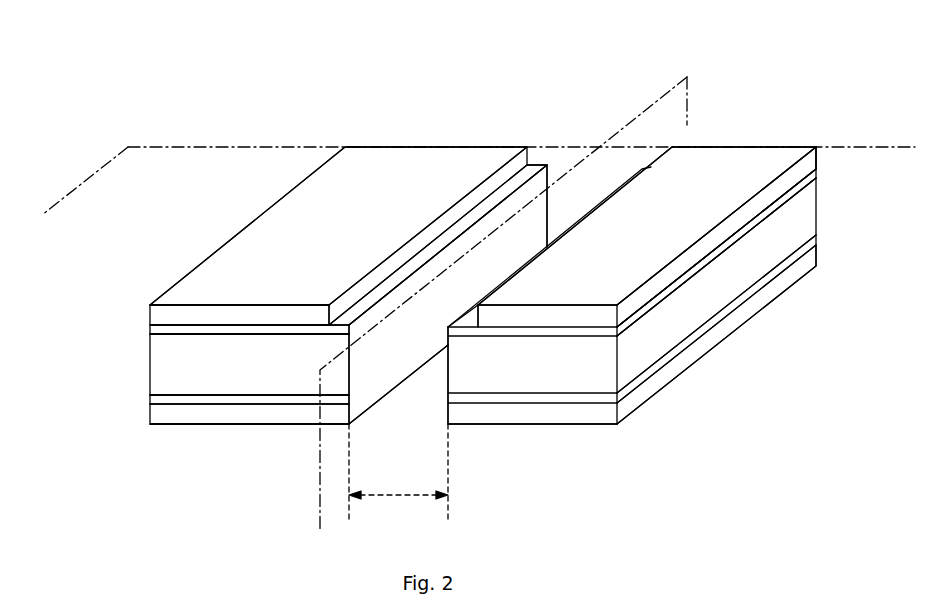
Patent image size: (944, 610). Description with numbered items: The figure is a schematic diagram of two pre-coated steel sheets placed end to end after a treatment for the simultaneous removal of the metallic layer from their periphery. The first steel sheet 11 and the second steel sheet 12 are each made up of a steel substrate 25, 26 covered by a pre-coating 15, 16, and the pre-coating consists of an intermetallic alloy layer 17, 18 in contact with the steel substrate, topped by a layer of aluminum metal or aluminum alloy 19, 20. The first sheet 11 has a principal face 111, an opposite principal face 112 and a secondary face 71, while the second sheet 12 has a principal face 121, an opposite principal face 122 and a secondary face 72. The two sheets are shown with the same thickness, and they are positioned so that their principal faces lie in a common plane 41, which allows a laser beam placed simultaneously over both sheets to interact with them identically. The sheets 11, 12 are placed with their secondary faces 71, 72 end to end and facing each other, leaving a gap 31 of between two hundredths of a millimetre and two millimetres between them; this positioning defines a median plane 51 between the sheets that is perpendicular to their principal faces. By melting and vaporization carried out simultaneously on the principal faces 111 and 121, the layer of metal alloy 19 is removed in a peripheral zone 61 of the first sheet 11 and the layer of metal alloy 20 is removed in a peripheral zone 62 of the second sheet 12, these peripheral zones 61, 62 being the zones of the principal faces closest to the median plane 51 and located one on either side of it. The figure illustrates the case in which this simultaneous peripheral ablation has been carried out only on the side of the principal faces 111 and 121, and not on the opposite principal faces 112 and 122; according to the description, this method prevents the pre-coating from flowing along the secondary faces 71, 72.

The first steel sheet 11 is at (357, 141).
The second steel sheet 12 is at (767, 139).
The pre-coating 15 is at (70, 255).
The pre-coating 16 is at (827, 147).
The intermetallic alloy layer 17 is at (170, 332).
The intermetallic alloy layer 18 is at (767, 215).
The layer of aluminum metal or aluminum alloy 19 is at (180, 312).
The layer of aluminum metal or aluminum alloy 20 is at (807, 167).
The steel substrate 25 is at (190, 387).
The steel substrate 26 is at (777, 237).
The gap 31 is at (398, 476).
The plane 41 is at (167, 146).
The median plane 51 is at (477, 247).
The peripheral zone 61 is at (520, 183).
The peripheral zone 62 is at (468, 317).
The secondary face 71 is at (367, 385).
The secondary face 72 is at (448, 397).
The principal face 111 is at (297, 217).
The opposite principal face 112 is at (205, 423).
The principal face 121 is at (668, 167).
The opposite principal face 122 is at (555, 425).